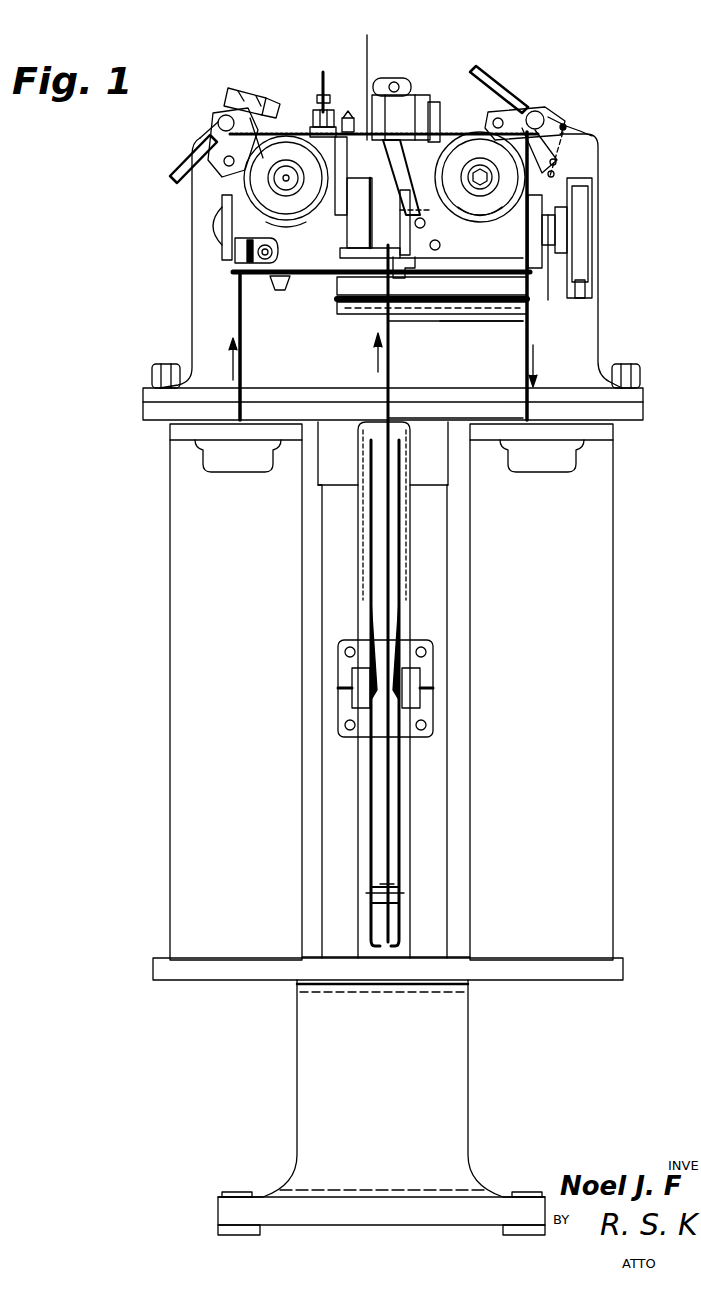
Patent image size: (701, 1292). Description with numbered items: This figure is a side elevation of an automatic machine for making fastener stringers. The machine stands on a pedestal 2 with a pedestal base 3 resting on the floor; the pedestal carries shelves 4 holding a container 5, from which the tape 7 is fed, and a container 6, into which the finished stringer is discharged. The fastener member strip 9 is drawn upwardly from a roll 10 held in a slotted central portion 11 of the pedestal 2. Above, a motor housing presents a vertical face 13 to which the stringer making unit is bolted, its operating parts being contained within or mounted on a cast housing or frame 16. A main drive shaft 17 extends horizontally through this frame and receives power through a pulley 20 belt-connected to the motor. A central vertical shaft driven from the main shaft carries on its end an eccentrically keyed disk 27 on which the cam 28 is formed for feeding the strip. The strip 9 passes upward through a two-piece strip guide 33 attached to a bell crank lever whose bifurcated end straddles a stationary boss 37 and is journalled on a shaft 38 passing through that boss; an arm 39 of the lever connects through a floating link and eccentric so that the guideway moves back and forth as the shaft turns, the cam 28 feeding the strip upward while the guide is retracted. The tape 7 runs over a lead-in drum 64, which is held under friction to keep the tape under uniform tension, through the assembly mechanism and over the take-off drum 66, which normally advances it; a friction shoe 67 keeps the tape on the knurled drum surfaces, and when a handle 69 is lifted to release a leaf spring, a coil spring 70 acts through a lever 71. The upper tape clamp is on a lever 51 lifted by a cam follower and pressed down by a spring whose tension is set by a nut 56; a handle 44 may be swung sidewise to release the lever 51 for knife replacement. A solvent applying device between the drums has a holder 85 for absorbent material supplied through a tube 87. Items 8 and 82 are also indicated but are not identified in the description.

The pedestal 2 is at (345, 780).
The pedestal base 3 is at (458, 1137).
The shelves 4 is at (252, 972).
The container 5 is at (178, 750).
The container 6 is at (600, 770).
The tape 7 is at (243, 323).
The right frame upright 8 is at (530, 342).
The fastener member strip 9 is at (392, 386).
The roll 10 is at (398, 590).
The slotted central portion 11 is at (410, 530).
The vertical face 13 is at (498, 380).
The cast housing or frame 16 is at (462, 244).
The main drive shaft 17 is at (547, 258).
The pulley 20 is at (592, 205).
The disk 27 is at (441, 132).
The cam 28 is at (365, 74).
The strip guide 33 is at (366, 316).
The stationary boss 37 is at (355, 232).
The shaft 38 is at (347, 294).
The arm 39 is at (348, 229).
The handle 44 is at (396, 82).
The lever 51 is at (405, 100).
The nut 56 is at (385, 80).
The lead-in drum 64 is at (247, 218).
The take-off drum 66 is at (492, 200).
The friction shoe 67 is at (248, 182).
The handle 69 is at (176, 182).
The coil spring 70 is at (245, 90).
The lever 71 is at (208, 137).
The left pulley 82 is at (284, 190).
The holder 85 is at (349, 112).
The tube 87 is at (323, 72).